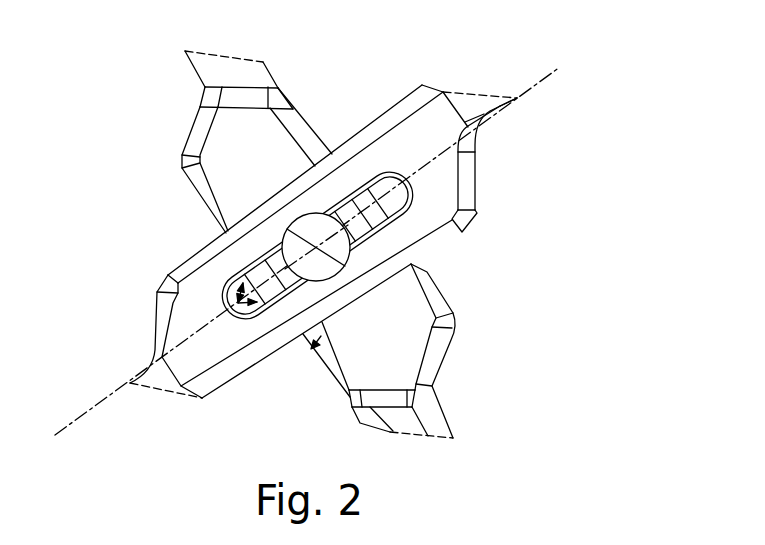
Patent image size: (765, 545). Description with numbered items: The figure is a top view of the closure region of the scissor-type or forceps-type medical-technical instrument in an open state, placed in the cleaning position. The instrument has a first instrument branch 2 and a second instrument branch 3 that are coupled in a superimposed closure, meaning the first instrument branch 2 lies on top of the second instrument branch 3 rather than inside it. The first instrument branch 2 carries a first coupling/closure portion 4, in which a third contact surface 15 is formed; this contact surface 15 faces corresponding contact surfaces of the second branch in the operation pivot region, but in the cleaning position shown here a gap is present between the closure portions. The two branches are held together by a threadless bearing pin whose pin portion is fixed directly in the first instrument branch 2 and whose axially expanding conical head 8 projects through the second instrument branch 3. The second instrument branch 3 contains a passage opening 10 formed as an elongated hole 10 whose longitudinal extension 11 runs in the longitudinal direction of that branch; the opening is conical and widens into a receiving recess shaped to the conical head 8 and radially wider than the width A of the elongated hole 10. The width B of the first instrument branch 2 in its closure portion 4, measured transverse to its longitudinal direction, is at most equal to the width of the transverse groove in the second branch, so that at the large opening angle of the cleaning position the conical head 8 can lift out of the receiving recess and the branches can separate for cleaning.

The first instrument branch 2 is at (255, 72).
The second instrument branch 3 is at (468, 103).
The first coupling/closure portion 4 is at (404, 365).
The conical head 8 is at (337, 242).
The passage opening / elongated hole 10 is at (392, 200).
The longitudinal extension 11 is at (543, 78).
The third contact surface 15 is at (260, 145).
The width of the elongated hole A is at (242, 174).
The width of the first instrument branch B is at (418, 278).